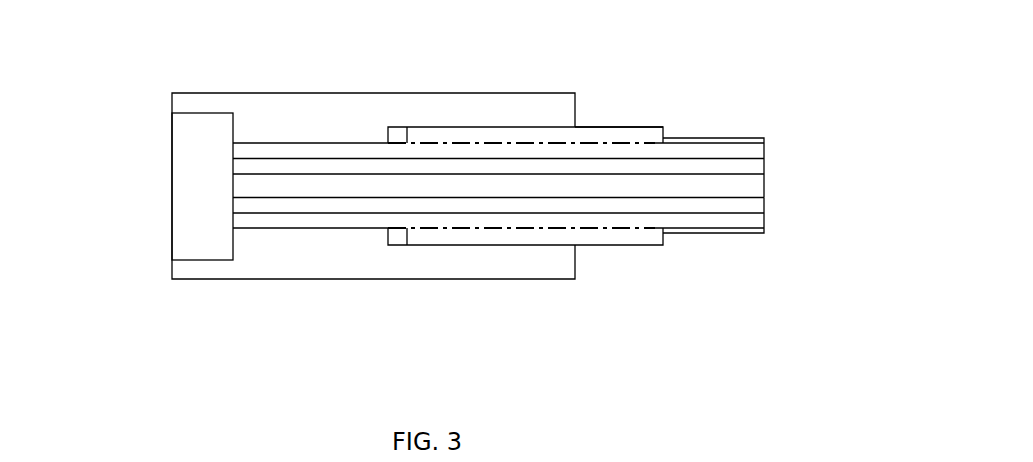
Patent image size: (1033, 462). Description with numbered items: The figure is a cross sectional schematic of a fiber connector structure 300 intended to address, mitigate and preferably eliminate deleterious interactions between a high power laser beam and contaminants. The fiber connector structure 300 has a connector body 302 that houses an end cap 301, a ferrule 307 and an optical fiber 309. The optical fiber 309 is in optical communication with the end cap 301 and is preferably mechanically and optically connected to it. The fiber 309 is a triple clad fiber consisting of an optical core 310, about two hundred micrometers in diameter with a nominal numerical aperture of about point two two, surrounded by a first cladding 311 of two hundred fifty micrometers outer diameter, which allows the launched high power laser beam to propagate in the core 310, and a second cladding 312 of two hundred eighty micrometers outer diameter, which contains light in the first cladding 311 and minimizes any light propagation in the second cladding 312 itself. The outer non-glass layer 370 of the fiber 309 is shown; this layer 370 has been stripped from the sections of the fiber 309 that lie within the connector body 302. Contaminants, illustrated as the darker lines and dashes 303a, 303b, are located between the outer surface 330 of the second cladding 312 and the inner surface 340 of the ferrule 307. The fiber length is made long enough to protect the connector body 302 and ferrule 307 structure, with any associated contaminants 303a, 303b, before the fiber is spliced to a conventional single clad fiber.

The fiber connector structure 300 is at (165, 55).
The end cap 301 is at (172, 152).
The connector body 302 is at (258, 275).
The contaminant 303a is at (403, 230).
The contaminant 303b is at (402, 141).
The ferrule 307 is at (474, 127).
The optical fiber 309 is at (613, 117).
The optical core 310 is at (760, 192).
The first cladding 311 is at (760, 167).
The second cladding 312 is at (760, 218).
The outer surface of the second cladding 330 is at (732, 235).
The inner surface of the ferrule 340 is at (527, 228).
The outer non-glass layer 370 is at (715, 138).